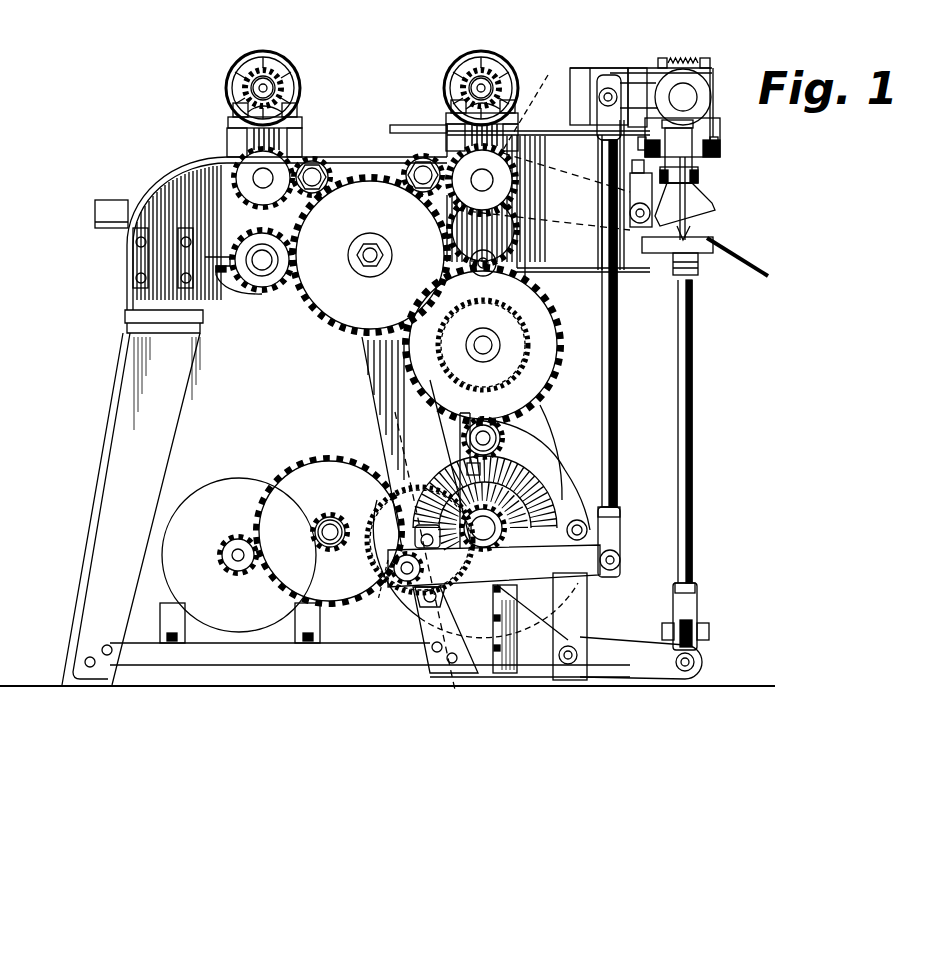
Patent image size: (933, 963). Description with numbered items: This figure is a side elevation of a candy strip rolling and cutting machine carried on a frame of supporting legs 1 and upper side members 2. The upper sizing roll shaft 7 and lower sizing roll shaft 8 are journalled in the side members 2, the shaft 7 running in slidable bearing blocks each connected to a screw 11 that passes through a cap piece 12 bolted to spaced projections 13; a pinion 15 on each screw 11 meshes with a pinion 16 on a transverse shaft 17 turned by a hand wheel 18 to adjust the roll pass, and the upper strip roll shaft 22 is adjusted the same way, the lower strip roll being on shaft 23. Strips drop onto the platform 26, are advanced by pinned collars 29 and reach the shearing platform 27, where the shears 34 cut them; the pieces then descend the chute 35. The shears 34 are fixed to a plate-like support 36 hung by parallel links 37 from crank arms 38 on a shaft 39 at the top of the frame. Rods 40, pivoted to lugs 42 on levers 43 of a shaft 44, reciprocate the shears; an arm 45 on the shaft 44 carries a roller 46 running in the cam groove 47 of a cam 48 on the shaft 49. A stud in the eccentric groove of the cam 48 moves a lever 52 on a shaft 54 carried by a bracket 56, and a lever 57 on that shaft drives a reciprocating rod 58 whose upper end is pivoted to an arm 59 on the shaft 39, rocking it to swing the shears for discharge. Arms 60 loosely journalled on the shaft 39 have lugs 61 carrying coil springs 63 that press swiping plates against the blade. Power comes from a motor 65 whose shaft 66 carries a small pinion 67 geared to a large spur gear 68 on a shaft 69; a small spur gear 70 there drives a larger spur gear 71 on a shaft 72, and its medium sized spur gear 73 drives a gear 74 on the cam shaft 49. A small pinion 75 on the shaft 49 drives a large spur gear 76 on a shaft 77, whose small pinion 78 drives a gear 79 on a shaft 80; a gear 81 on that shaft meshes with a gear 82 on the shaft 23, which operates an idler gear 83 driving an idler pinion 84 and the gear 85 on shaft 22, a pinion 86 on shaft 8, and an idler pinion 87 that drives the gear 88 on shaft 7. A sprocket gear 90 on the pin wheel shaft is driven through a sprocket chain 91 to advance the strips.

The supporting legs 1 is at (118, 453).
The upper side members 2 is at (366, 170).
The shaft 7 is at (214, 177).
The shaft 8 is at (263, 275).
The screw 11 is at (450, 132).
The cap piece 12 is at (290, 118).
The spaced projections 13 is at (237, 137).
The pinion 15 is at (236, 106).
The pinion 16 is at (272, 80).
The transverse shaft 17 is at (251, 81).
The hand wheel 18 is at (268, 51).
The shaft 22 is at (486, 179).
The shaft 23 is at (497, 263).
The platform 26 is at (660, 262).
The shearing platform 27 is at (697, 260).
The collars 29 is at (630, 215).
The shears 34 is at (708, 212).
The chute 35 is at (752, 266).
The plate-like support 36 is at (700, 174).
The parallel links 37 is at (690, 146).
The crank arms 38 is at (712, 125).
The shaft 39 is at (690, 97).
The rods 40 is at (693, 398).
The lugs 42 is at (692, 625).
The levers 43 is at (618, 652).
The shaft 44 is at (566, 662).
The arm 45 is at (580, 612).
The roller 46 is at (612, 504).
The cam groove 47 is at (502, 471).
The cam 48 is at (548, 472).
The shaft 49 is at (497, 530).
The lever 52 is at (458, 678).
The shaft 54 is at (375, 601).
The bracket 56 is at (441, 600).
The lever 57 is at (494, 566).
The reciprocating rod 58 is at (618, 362).
The arm 59 is at (634, 85).
The arms 60 is at (700, 235).
The upstanding lug 61 is at (662, 58).
The coil spring 63 is at (683, 57).
The motor 65 is at (212, 498).
The shaft 66 is at (238, 560).
The small pinion 67 is at (193, 625).
The large spur gear 68 is at (332, 598).
The shaft 69 is at (329, 535).
The small spur gear 70 is at (328, 526).
The larger spur gear 71 is at (417, 543).
The shaft 72 is at (398, 500).
The medium sized spur gear 73 is at (404, 576).
The gear 74 is at (530, 623).
The small pinion 75 is at (515, 516).
The large spur gear 76 is at (546, 420).
The shaft 77 is at (484, 424).
The small pinion 78 is at (505, 422).
The gear 79 is at (452, 345).
The shaft 80 is at (470, 345).
The gear 81 is at (525, 320).
The gear 82 is at (505, 248).
The idler gear 83 is at (312, 316).
The idler pinion 84 is at (421, 168).
The gear 85 is at (511, 153).
The pinion 86 is at (252, 280).
The idler pinion 87 is at (322, 164).
The gear 88 is at (247, 188).
The sprocket gear 90 is at (638, 210).
The sprocket chain 91 is at (532, 107).